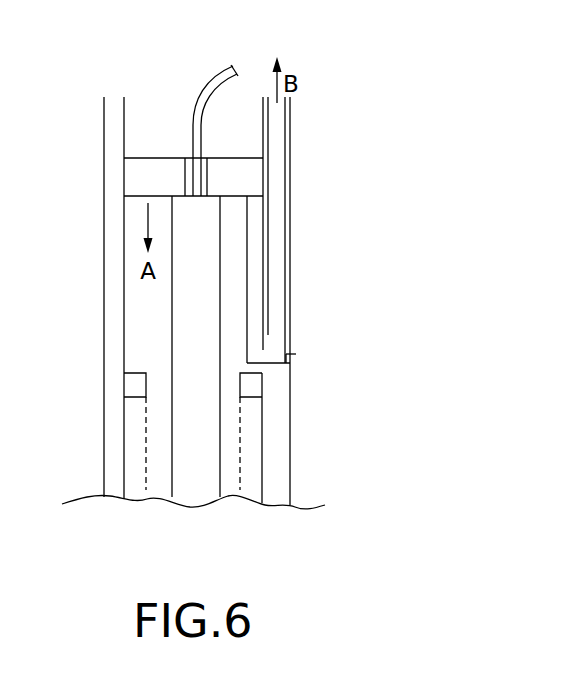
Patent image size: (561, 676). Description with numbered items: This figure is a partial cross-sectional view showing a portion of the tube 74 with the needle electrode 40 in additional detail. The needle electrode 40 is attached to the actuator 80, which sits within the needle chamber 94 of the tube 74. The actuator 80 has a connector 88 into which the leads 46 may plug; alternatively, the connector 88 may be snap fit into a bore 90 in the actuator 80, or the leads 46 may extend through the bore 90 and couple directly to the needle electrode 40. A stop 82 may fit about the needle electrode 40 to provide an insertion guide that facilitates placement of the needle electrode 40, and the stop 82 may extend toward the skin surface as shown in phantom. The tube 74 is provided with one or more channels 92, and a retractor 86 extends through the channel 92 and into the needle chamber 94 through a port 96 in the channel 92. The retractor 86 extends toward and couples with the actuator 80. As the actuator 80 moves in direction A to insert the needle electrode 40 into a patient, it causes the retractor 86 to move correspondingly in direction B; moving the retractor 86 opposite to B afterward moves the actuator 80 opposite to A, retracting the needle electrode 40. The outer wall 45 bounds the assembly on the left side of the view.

The outer housing 45 is at (132, 99).
The bore 90 is at (170, 126).
The lead 46 is at (223, 73).
The actuator 80 is at (142, 177).
The connector 88 is at (203, 179).
The needle chamber 94 is at (138, 304).
The stop 82 is at (137, 386).
The retractor 86 is at (256, 305).
The port 96 is at (296, 354).
The channel 92 is at (287, 389).
The tube 74 is at (278, 472).
The needle electrode 40 is at (203, 490).